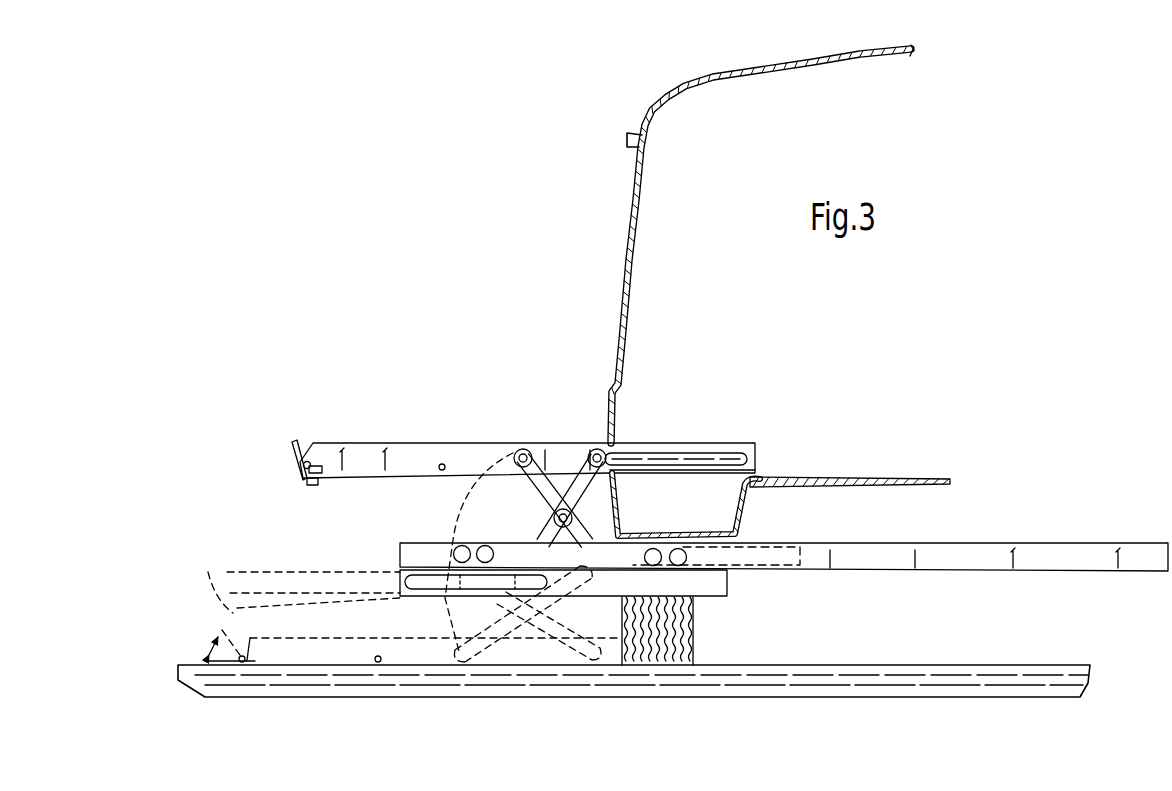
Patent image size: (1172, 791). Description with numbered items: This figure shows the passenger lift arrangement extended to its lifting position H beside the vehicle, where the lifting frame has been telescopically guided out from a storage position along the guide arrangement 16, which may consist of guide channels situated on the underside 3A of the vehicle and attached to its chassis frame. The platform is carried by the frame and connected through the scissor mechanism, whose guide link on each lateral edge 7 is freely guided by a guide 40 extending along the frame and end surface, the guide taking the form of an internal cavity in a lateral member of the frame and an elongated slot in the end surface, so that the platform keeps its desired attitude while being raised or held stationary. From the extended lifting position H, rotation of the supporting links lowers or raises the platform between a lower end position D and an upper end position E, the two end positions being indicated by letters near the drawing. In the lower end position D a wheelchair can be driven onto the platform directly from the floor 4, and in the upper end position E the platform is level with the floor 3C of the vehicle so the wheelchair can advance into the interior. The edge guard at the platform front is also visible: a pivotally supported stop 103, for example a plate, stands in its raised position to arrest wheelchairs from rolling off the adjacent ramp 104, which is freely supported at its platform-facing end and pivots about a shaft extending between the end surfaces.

The lateral edge 7 is at (470, 453).
The guide 40 is at (677, 457).
The stop 103 is at (293, 455).
The ramp 104 is at (342, 483).
The floor of the vehicle 3C is at (883, 470).
The guide arrangement 16 is at (1010, 537).
The floor 4 is at (180, 659).
The underside of a vehicle 3A is at (870, 632).
The extended lifting position H is at (438, 606).
The lower end position D is at (200, 640).
The upper end position E is at (304, 432).